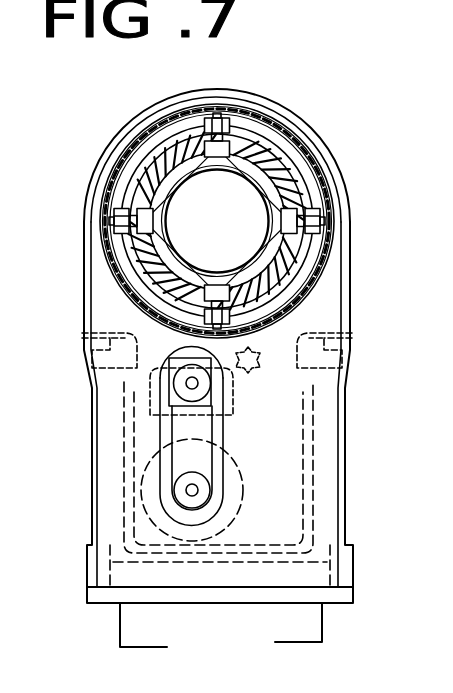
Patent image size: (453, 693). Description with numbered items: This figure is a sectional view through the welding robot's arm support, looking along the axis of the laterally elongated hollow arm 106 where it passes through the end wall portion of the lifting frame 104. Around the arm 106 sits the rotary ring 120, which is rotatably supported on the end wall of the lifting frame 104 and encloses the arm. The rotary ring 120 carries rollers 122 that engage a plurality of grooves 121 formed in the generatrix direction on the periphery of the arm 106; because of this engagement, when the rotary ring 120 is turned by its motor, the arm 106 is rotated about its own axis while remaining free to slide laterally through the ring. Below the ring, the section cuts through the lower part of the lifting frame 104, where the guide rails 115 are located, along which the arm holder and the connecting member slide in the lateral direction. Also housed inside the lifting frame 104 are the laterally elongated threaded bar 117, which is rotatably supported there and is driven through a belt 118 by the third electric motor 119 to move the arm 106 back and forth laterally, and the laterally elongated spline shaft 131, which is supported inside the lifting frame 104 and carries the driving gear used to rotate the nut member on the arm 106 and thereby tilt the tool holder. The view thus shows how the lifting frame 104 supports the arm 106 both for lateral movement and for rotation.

The lifting frame 104 is at (346, 518).
The arm 106 is at (283, 196).
The guide rails 115 is at (82, 345).
The threaded bar 117 is at (174, 383).
The belt 118 is at (172, 466).
The third electric motor 119 is at (245, 492).
The rotary ring 120 is at (262, 160).
The grooves 121 is at (217, 167).
The rollers 122 is at (305, 210).
The spline shaft 131 is at (258, 371).